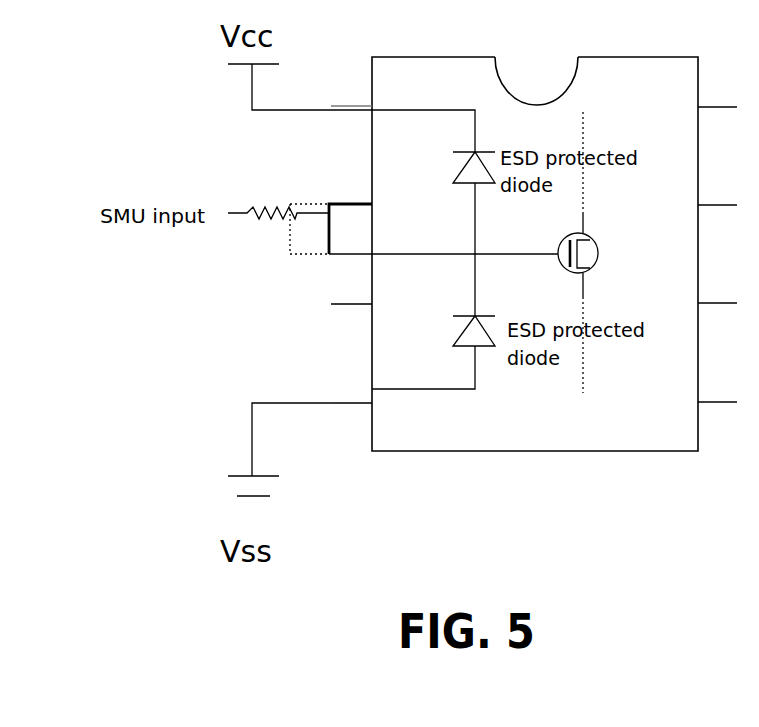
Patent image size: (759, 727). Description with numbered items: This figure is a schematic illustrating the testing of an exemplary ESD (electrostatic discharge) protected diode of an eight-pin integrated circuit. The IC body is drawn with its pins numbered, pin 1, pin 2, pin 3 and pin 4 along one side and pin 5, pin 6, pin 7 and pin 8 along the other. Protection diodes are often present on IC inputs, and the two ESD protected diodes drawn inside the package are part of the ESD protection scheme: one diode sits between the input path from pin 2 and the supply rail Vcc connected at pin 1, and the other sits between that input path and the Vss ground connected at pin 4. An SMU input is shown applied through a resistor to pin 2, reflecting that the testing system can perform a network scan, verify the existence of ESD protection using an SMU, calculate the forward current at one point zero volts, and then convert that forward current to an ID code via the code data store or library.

The pin 1 (Vcc) 1 is at (374, 103).
The pin 2 (SMU input) 2 is at (373, 205).
The pin 3 is at (374, 303).
The pin 4 (Vss) 4 is at (374, 400).
The pin 5 is at (694, 400).
The pin 6 is at (694, 303).
The pin 7 is at (694, 204).
The pin 8 is at (694, 105).